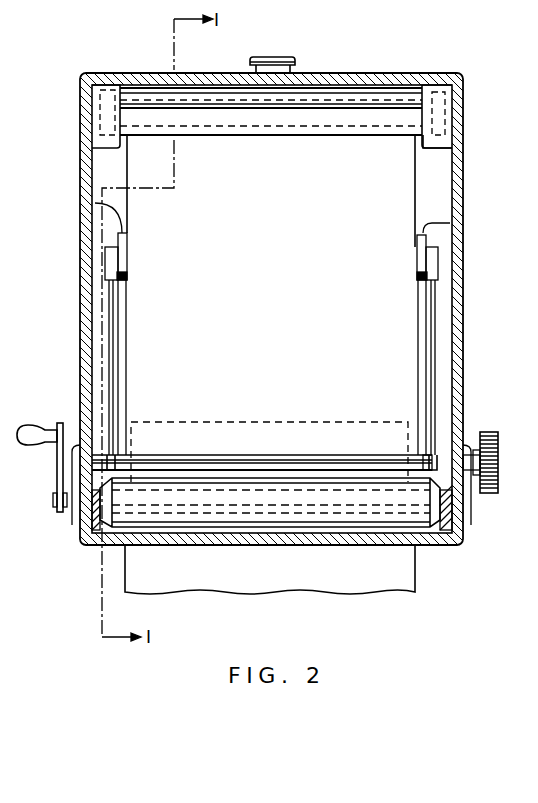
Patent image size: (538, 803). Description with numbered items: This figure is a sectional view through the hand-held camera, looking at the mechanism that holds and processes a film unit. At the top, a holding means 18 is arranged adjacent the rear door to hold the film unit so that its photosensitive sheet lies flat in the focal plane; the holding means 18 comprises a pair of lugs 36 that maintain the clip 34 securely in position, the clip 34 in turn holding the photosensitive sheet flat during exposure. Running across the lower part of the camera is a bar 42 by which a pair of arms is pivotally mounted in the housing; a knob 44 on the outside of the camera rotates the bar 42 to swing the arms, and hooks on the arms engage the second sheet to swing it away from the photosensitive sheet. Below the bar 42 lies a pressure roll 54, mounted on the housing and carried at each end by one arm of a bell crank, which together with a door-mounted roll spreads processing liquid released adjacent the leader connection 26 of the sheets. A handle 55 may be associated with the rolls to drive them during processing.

The holding means 18 is at (432, 110).
The leader connection 26 is at (219, 581).
The clip 34 is at (362, 108).
The lugs 36 is at (433, 143).
The bar 42 is at (296, 460).
The knob 44 is at (495, 432).
The pressure roll 54 is at (415, 517).
The handle 55 is at (57, 456).